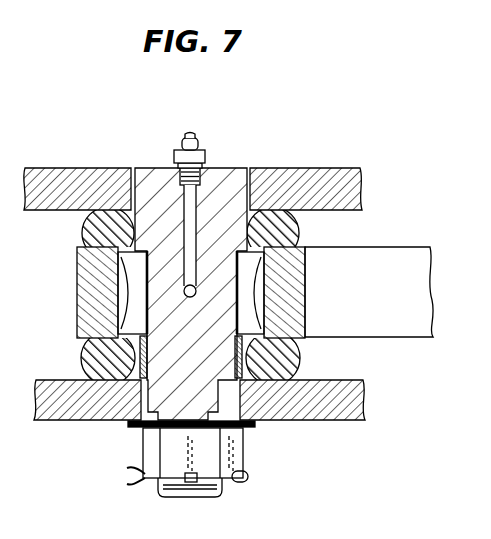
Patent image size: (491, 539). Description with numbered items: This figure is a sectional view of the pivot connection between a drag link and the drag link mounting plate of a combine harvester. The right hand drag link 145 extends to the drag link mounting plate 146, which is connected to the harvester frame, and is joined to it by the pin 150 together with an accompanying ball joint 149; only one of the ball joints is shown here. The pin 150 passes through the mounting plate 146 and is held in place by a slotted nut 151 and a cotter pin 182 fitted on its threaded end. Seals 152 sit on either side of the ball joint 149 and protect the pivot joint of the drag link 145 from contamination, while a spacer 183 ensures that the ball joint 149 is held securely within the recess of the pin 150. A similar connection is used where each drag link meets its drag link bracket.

The right hand drag link 145 is at (387, 247).
The drag link mounting plate 146 is at (95, 167).
The ball joint 149 is at (262, 257).
The right hand pin 150 is at (229, 167).
The slotted nut 151 is at (243, 448).
The seals 152 is at (298, 229).
The cotter pin 182 is at (127, 480).
The spacer 183 is at (142, 372).